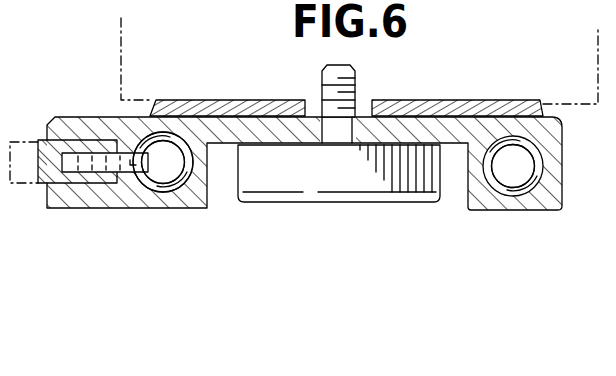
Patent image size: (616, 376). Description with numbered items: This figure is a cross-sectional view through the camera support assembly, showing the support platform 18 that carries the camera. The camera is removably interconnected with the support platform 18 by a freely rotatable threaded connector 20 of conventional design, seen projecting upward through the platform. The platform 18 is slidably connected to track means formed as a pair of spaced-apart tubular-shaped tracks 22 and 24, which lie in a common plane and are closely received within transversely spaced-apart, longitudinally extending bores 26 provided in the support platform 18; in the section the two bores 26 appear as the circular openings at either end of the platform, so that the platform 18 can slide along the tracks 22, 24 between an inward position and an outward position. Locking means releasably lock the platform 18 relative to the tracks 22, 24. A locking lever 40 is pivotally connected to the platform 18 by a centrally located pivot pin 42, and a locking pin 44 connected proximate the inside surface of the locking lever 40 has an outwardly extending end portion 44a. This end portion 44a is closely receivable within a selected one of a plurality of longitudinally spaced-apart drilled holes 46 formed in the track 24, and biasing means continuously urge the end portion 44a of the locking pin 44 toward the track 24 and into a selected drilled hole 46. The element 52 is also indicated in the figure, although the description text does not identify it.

The support platform 18 is at (278, 116).
The threaded connector 20 is at (347, 98).
The tubular-shaped track 22 is at (538, 154).
The tubular-shaped track 24 is at (160, 150).
The bore 26 is at (172, 184).
The locking lever 40 is at (43, 188).
The pivot pin 42 is at (93, 188).
The locking pin 44 is at (92, 168).
The end portion of locking pin 44a is at (131, 166).
The drilled holes 46 is at (160, 147).
The arm 52 is at (303, 52).